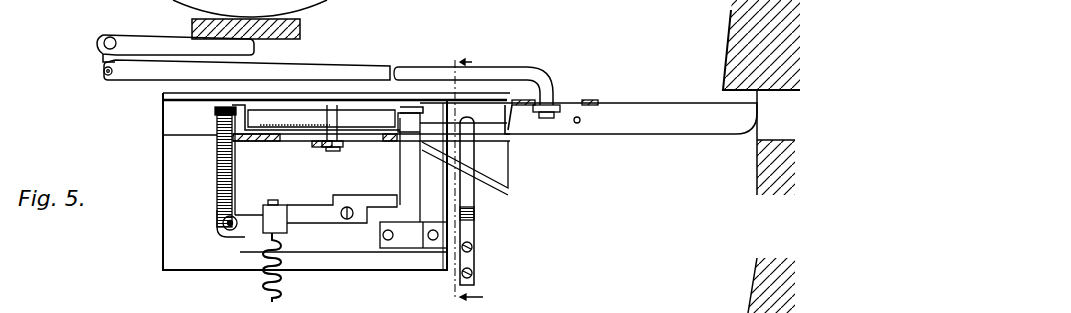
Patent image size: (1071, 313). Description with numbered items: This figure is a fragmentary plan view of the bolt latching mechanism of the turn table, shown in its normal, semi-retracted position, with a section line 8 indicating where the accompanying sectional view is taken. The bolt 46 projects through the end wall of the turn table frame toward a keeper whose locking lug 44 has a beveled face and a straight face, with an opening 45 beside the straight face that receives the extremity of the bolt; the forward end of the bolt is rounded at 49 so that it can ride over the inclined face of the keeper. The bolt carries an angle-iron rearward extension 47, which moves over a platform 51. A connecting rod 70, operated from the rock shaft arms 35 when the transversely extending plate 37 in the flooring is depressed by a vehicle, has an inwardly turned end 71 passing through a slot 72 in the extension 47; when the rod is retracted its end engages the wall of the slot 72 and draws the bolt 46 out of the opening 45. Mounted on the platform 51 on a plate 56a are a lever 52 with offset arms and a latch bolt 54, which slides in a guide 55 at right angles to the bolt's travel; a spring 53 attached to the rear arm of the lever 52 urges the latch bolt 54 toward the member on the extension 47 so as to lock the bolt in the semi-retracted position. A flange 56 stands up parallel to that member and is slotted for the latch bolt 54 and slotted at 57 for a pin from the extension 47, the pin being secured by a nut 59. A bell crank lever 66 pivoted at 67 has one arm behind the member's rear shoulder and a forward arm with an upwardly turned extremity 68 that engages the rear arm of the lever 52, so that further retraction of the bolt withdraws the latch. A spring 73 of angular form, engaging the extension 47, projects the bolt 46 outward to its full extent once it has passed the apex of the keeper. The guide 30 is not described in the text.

The section line 8 is at (467, 177).
The channel guide 30 is at (284, 125).
The arm 35 is at (150, 40).
The transversely extending plate 37 is at (301, 27).
The locking lug 44 is at (733, 40).
The opening 45 is at (773, 142).
The bolt 46 is at (700, 101).
The rearward extension 47 is at (564, 128).
The rounded forward end 49 is at (752, 141).
The platform 51 is at (336, 181).
The lever 52 is at (345, 223).
The spring 53 is at (292, 267).
The latch bolt 54 is at (413, 187).
The guide 55 is at (490, 226).
The flange 56 is at (279, 144).
The plate 56a is at (383, 287).
The slot 57 is at (410, 147).
The nut 59 is at (339, 150).
The bell crank lever 66 is at (222, 186).
The pivot 67 is at (232, 231).
The upwardly turned extremity 68 is at (296, 235).
The connecting rod 70 is at (361, 70).
The inwardly turned end 71 is at (548, 79).
The slot 72 is at (573, 100).
The spring 73 is at (581, 120).